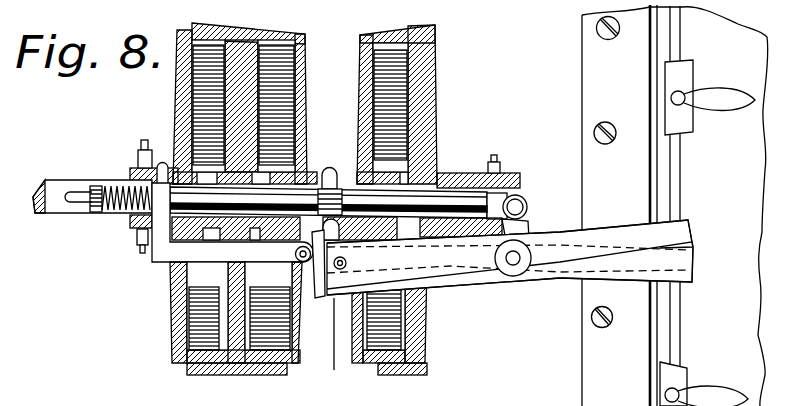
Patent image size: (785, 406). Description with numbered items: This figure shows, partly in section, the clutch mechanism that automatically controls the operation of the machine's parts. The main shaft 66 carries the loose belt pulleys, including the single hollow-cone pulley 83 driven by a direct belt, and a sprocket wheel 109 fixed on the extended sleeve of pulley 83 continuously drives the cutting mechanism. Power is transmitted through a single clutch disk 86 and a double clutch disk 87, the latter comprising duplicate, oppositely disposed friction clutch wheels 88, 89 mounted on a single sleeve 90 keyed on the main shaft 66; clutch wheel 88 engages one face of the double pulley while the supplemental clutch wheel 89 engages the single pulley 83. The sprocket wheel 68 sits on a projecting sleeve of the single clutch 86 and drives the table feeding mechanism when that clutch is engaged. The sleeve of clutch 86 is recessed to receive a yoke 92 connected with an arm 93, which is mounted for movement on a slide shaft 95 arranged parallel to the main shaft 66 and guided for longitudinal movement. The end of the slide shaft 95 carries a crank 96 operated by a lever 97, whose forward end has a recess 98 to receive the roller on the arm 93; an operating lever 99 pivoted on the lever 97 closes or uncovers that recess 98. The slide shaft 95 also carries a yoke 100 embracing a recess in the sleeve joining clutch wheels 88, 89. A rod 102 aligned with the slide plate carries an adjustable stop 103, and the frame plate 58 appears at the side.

The frame plate 58 is at (675, 206).
The main shaft 66 is at (57, 208).
The sprocket wheel 68 is at (139, 150).
The single cone pulley 83 is at (425, 18).
The single clutch disk 86 is at (177, 83).
The double clutch disk 87 is at (258, 14).
The clutch wheel 88 is at (303, 69).
The clutch wheel 89 is at (358, 45).
The sleeve 90 is at (338, 174).
The yoke 92 is at (160, 165).
The arm 93 is at (172, 252).
The slide shaft 95 is at (218, 202).
The crank 96 is at (528, 222).
The lever 97 is at (562, 276).
The recess 98 is at (322, 254).
The operating lever 99 is at (473, 267).
The yoke 100 is at (347, 193).
The rod 102 is at (700, 205).
The stop 103 is at (687, 115).
The sprocket wheel 109 is at (493, 156).